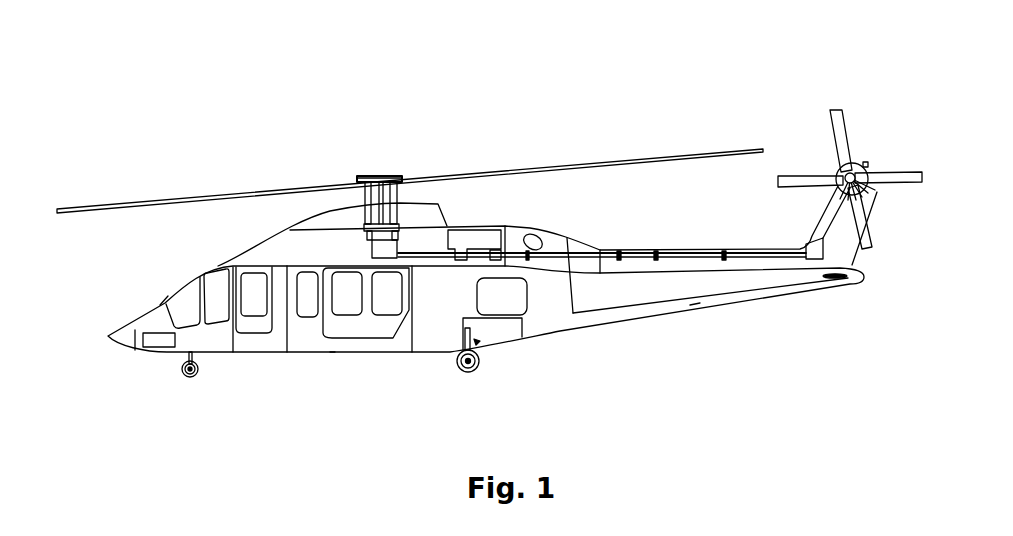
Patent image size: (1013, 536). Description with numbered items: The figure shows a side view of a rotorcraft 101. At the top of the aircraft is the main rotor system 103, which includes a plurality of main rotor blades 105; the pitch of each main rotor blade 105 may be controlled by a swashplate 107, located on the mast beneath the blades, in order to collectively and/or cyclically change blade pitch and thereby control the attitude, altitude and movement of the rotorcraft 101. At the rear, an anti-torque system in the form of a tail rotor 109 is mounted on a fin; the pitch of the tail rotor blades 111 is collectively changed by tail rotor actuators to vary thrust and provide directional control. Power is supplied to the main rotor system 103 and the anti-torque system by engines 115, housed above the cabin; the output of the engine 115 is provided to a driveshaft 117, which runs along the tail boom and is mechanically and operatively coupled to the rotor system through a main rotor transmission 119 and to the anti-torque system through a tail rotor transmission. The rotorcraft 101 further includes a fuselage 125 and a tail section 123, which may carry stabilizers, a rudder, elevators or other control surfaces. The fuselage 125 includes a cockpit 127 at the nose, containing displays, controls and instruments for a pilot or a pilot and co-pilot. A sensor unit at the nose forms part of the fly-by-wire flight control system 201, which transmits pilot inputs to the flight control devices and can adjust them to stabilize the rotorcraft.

The rotorcraft 101 is at (219, 65).
The main rotor system 103 is at (407, 146).
The main rotor blade 105 is at (652, 152).
The swashplate 107 is at (402, 223).
The tail rotor 109 is at (856, 77).
The tail rotor blade 111 is at (913, 166).
The engine 115 is at (488, 229).
The driveshaft 117 is at (428, 256).
The main rotor transmission 119 is at (372, 250).
The tail section 123 is at (698, 303).
The fuselage 125 is at (333, 347).
The cockpit 127 is at (170, 294).
The fly-by-wire flight control system 201 is at (146, 341).